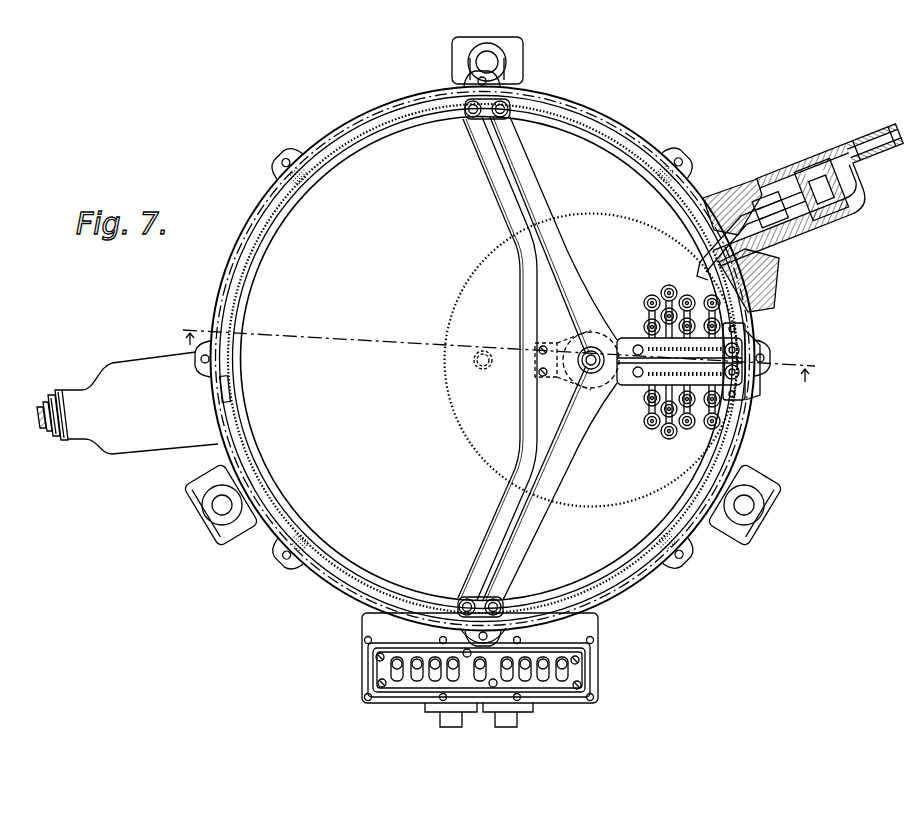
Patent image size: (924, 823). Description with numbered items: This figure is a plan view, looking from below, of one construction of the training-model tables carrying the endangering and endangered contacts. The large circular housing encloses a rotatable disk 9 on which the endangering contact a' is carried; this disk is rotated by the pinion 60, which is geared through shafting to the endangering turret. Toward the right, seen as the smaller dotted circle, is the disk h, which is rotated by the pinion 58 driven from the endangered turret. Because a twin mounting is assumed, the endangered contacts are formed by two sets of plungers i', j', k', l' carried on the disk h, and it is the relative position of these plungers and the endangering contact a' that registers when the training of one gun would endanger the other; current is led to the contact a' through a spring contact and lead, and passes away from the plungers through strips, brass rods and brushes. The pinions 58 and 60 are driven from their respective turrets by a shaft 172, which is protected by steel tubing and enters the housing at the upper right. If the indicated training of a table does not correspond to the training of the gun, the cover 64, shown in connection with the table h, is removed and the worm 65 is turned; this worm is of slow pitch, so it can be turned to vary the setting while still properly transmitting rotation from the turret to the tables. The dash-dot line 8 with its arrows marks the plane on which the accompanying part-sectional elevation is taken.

The lamp housing ring 9 is at (273, 487).
The disk h is at (660, 215).
The pinion 60 is at (228, 398).
The section line 8- 8 is at (508, 356).
The cover 64 is at (857, 209).
The worm 65 is at (790, 232).
The shaft 172 is at (760, 258).
The pinion 58 is at (718, 266).
The endangering contact a' is at (773, 361).
The plunger l' is at (629, 424).
The plunger k' is at (649, 425).
The plunger j' is at (670, 425).
The plunger i' is at (696, 425).